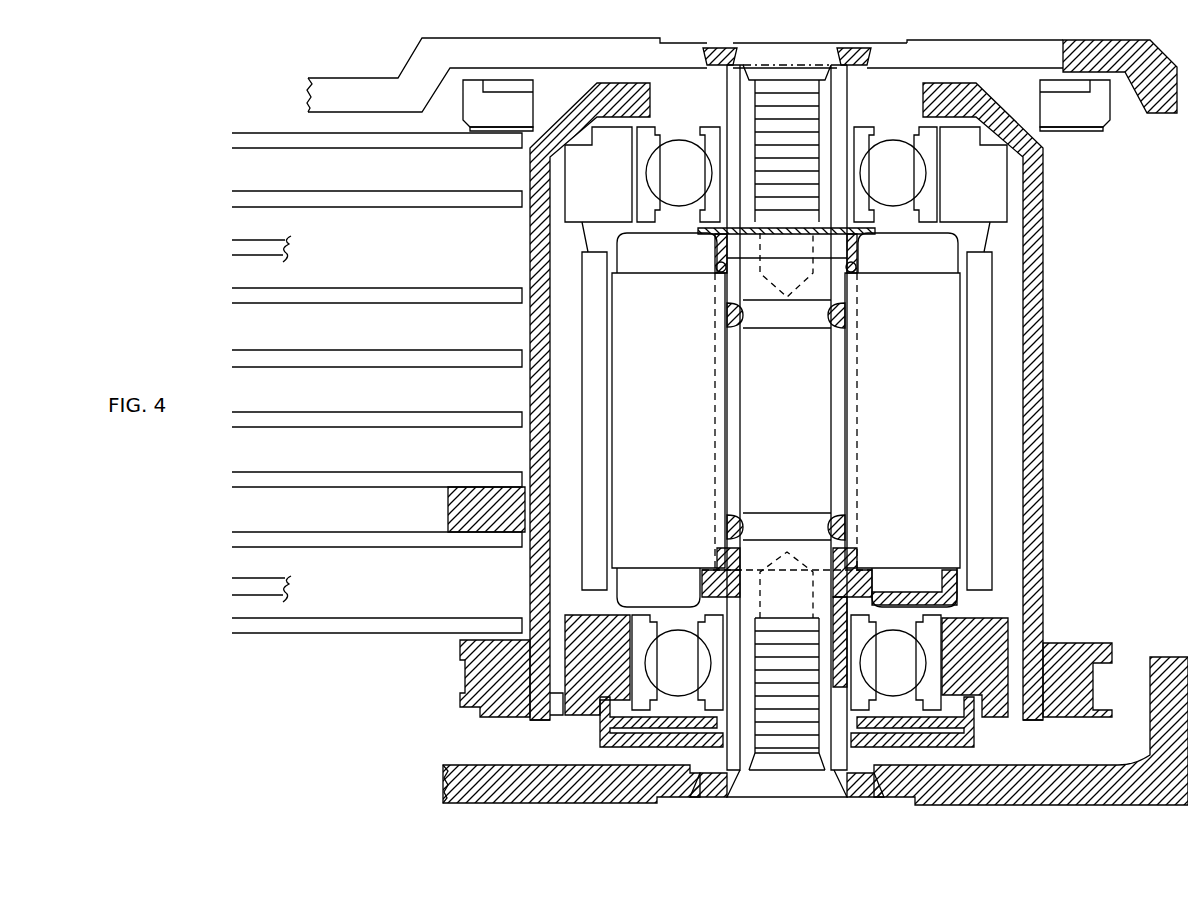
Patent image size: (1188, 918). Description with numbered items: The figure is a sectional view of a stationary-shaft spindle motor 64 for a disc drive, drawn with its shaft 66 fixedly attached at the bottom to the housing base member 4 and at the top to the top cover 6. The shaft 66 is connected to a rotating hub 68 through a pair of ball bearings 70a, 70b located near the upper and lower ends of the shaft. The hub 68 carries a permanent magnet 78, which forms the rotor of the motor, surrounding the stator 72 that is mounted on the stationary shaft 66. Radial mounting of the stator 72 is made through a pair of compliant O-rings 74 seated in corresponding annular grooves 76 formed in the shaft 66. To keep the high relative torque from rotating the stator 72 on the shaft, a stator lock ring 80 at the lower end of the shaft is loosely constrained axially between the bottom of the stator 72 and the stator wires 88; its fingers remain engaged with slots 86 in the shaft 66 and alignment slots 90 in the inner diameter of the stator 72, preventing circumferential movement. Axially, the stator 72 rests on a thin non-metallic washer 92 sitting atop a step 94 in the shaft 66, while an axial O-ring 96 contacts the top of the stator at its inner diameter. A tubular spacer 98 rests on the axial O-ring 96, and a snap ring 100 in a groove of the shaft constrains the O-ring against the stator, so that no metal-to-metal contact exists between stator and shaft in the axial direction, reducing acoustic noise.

The housing base member 4 is at (1012, 797).
The top cover 6 is at (995, 50).
The spindle motor 64 is at (831, 401).
The shaft 66 is at (823, 407).
The hub 68 is at (1037, 272).
The ball bearing 70a is at (678, 680).
The ball bearing 70b is at (680, 145).
The stator 72 is at (922, 463).
The O-rings 74 is at (843, 313).
The annular grooves 76 is at (807, 313).
The permanent magnet 78 is at (977, 327).
The stator lock ring 80 is at (875, 582).
The slots 86 is at (857, 573).
The stator wires 88 is at (855, 637).
The alignment slots 90 is at (717, 407).
The non-metallic washer 92 is at (713, 573).
The step 94 is at (688, 608).
The axial O-ring 96 is at (856, 267).
The tubular spacer 98 is at (860, 236).
The snap ring 100 is at (877, 228).